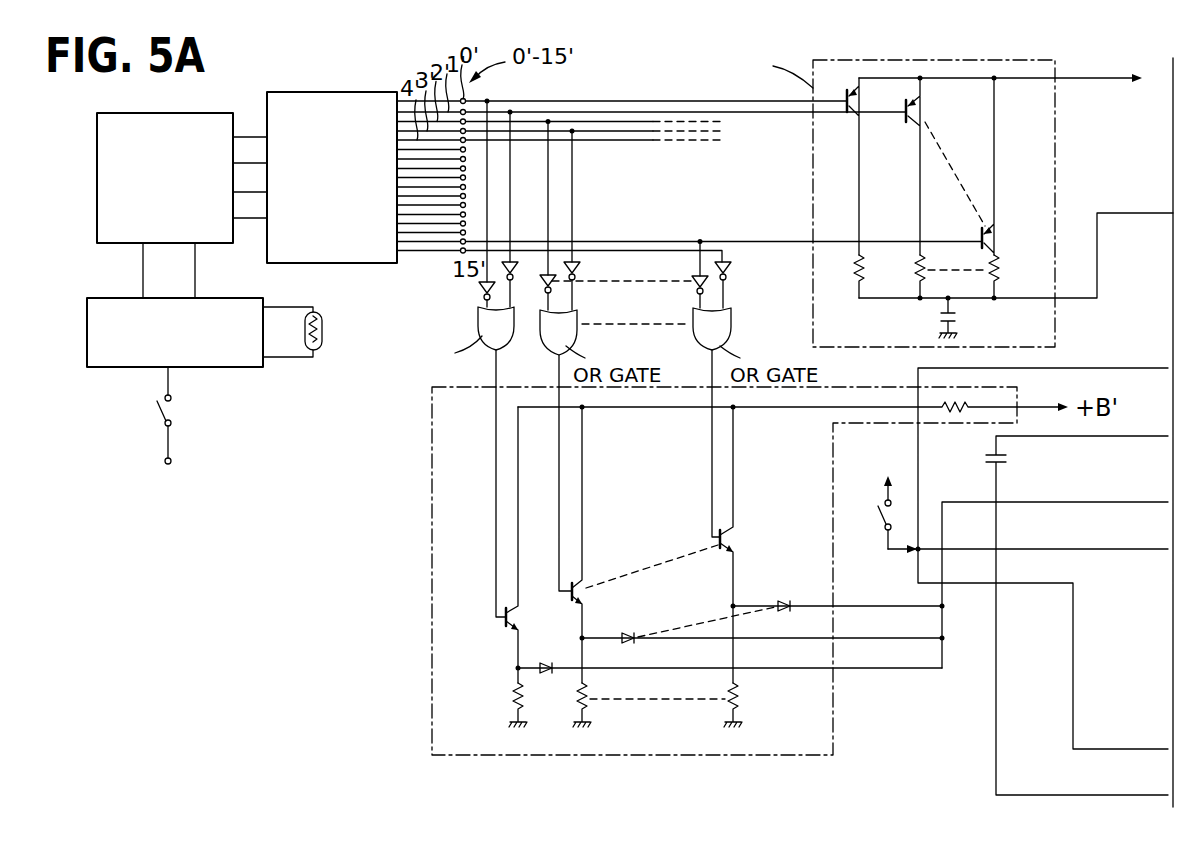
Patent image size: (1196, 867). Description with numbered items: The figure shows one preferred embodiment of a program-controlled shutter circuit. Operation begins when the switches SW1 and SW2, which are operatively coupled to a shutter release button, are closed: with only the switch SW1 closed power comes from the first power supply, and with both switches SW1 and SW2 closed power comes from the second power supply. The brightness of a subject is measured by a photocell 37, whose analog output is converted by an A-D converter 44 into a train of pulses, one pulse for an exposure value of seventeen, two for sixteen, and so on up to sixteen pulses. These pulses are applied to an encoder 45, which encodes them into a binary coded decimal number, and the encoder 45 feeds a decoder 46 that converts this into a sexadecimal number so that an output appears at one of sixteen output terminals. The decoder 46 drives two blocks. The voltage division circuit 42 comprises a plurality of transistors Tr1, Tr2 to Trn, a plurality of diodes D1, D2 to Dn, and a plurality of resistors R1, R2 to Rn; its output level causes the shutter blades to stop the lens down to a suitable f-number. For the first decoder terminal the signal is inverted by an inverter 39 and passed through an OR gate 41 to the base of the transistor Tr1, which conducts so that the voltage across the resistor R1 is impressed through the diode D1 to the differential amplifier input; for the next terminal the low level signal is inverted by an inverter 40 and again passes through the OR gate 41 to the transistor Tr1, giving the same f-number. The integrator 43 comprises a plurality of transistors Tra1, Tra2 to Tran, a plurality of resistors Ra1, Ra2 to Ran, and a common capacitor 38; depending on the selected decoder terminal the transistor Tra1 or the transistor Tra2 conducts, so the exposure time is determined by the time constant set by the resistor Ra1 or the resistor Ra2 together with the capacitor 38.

The photocell 37 is at (325, 318).
The capacitor 38 is at (962, 319).
The inverter 39 is at (479, 291).
The inverter 40 is at (515, 270).
The OR gate 41 is at (478, 320).
The voltage division circuit 42 is at (834, 686).
The integrator 43 is at (1056, 96).
The A-D converter 44 is at (113, 367).
The encoder 45 is at (97, 221).
The decoder 46 is at (368, 92).
The switch SW1 is at (878, 518).
The switch SW2 is at (172, 411).
The transistor Tr1 is at (519, 617).
The transistor Tr2 is at (584, 596).
The transistor Trn is at (736, 538).
The diode D1 is at (580, 641).
The diode D2 is at (761, 651).
The diode Dn is at (837, 618).
The resistor R1 is at (510, 692).
The resistor R2 is at (575, 696).
The resistor Rn is at (728, 700).
The transistor Tra1 is at (861, 103).
The transistor Tra2 is at (925, 112).
The transistor Tran is at (997, 228).
The resistor Ra1 is at (866, 271).
The resistor Ra2 is at (928, 271).
The resistor Ran is at (1002, 267).